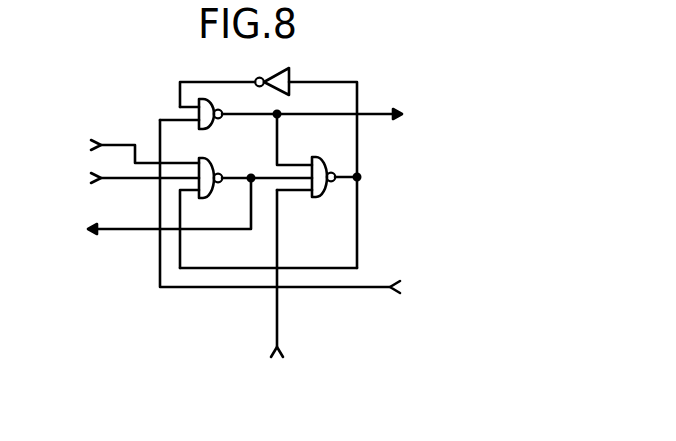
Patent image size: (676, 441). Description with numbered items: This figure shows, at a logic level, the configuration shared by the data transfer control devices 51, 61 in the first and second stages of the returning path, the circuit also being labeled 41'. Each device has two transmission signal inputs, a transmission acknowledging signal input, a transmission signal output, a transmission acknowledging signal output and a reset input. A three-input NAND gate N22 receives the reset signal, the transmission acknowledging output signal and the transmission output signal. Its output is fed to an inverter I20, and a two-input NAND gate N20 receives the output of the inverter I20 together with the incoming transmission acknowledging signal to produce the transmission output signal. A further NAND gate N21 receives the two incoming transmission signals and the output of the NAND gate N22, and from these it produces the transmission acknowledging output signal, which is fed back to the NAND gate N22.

The data transfer control device 51 is at (557, 147).
The data transfer control device 61 is at (603, 147).
The flip-flop circuit 41' is at (321, 221).
The inverter I20 is at (268, 157).
The 2-input NAND gate N20 is at (281, 126).
The NAND gate N21 is at (200, 213).
The 3-input NAND gate N22 is at (270, 191).